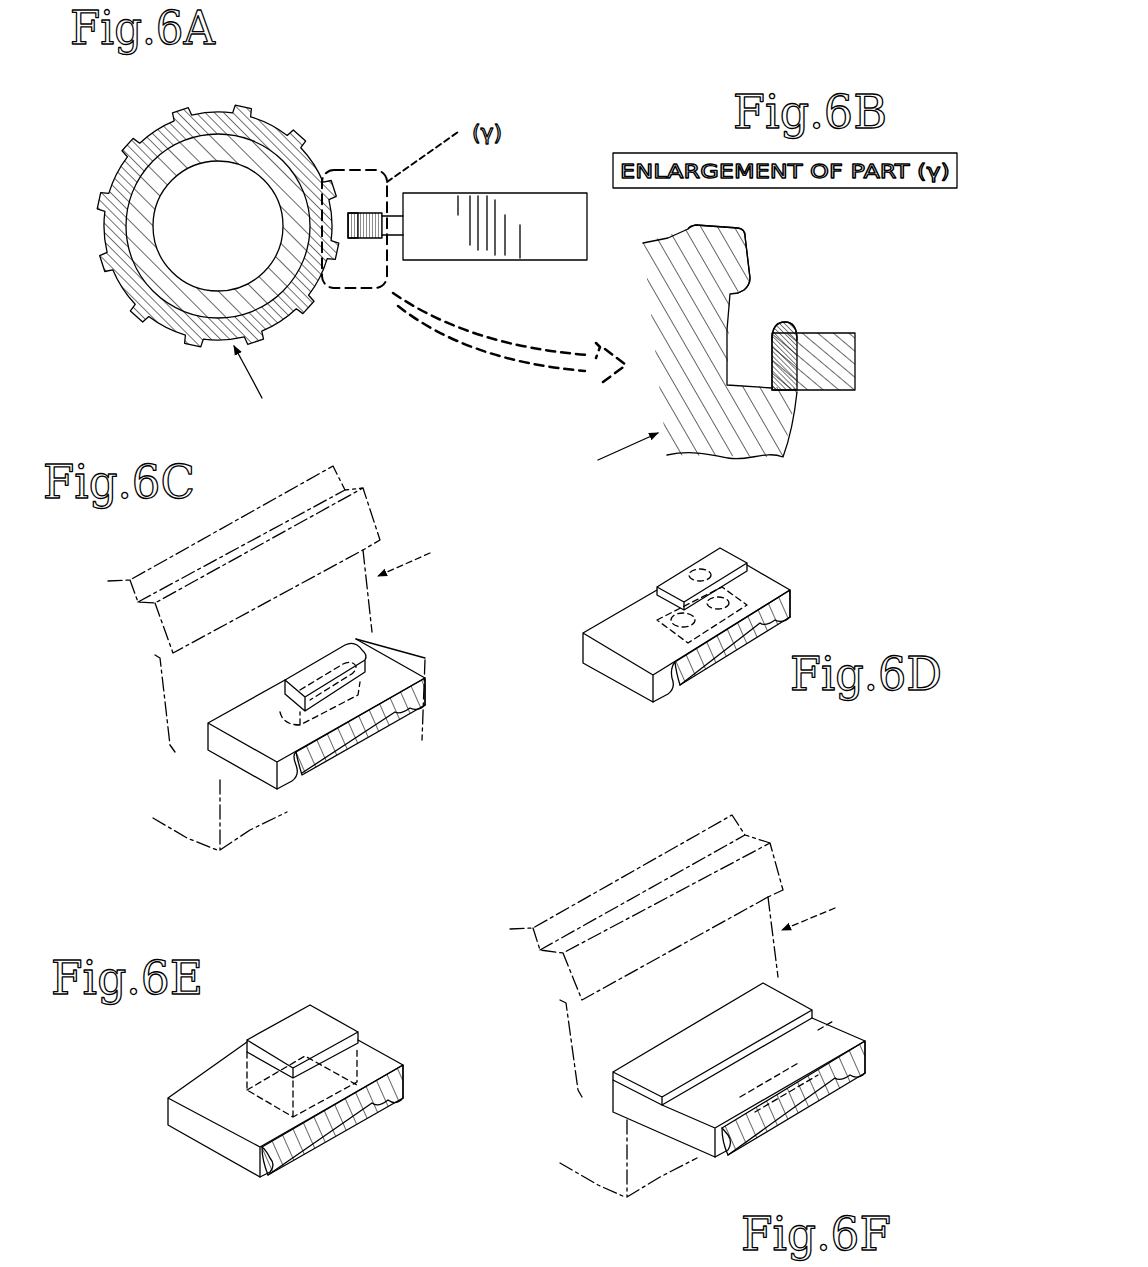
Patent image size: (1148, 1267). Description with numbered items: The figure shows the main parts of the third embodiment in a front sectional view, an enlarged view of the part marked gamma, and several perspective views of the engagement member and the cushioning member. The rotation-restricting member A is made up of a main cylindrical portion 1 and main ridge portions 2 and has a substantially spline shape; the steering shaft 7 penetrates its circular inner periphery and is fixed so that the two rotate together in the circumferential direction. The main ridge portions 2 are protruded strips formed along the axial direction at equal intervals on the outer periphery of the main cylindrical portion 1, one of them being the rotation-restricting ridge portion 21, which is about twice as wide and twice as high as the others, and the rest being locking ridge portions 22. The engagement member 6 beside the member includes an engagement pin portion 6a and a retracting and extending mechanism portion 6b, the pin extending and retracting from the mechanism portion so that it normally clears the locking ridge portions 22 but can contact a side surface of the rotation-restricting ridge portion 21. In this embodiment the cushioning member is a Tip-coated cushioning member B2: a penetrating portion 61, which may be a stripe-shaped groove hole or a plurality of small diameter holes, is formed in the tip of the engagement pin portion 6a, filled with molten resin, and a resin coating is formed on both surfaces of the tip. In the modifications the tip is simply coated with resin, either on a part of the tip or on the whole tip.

In FIG. 6A, the main cylindrical portion 1 is at (270, 330).
In FIG. 6A, the main ridge portion 2 is at (251, 226).
In FIG. 6B, the main ridge portion 2 is at (759, 348).
In FIG. 6A, the rotation-restricting ridge portion 21 is at (330, 323).
In FIG. 6B, the rotation-restricting ridge portion 21 is at (798, 446).
In FIG. 6C, the rotation-restricting ridge portion 21 is at (250, 832).
In FIG. 6F, the rotation-restricting ridge portion 21 is at (658, 1180).
In FIG. 6A, the locking ridge portion 22 is at (243, 106).
In FIG. 6B, the locking ridge portion 22 is at (752, 246).
In FIG. 6C, the locking ridge portion 22 is at (395, 515).
In FIG. 6F, the locking ridge portion 22 is at (795, 858).
In FIG. 6A, the engagement member 6 is at (467, 212).
In FIG. 6B, the engagement member 6 is at (825, 335).
In FIG. 6C, the engagement member 6 is at (348, 693).
In FIG. 6D, the engagement member 6 is at (725, 607).
In FIG. 6E, the engagement member 6 is at (257, 1098).
In FIG. 6F, the engagement member 6 is at (739, 1100).
In FIG. 6A, the engagement pin portion 6a is at (370, 212).
In FIG. 6B, the engagement pin portion 6a is at (822, 330).
In FIG. 6C, the engagement pin portion 6a is at (394, 658).
In FIG. 6D, the engagement pin portion 6a is at (767, 576).
In FIG. 6E, the engagement pin portion 6a is at (190, 1085).
In FIG. 6F, the engagement pin portion 6a is at (744, 1147).
In FIG. 6A, the retracting and extending mechanism portion 6b is at (533, 258).
In FIG. 6A, the steering shaft 7 is at (204, 163).
In FIG. 6B, the penetrating portion 61 is at (785, 345).
In FIG. 6C, the penetrating portion 61 is at (388, 655).
In FIG. 6D, the penetrating portion 61 is at (658, 633).
In FIG. 6E, the penetrating portion 61 is at (302, 1082).
In FIG. 6A, the Tip-coated cushioning member B2 is at (352, 210).
In FIG. 6B, the Tip-coated cushioning member B2 is at (797, 319).
In FIG. 6C, the Tip-coated cushioning member B2 is at (312, 676).
In FIG. 6D, the Tip-coated cushioning member B2 is at (730, 546).
In FIG. 6E, the Tip-coated cushioning member B2 is at (330, 1014).
In FIG. 6F, the Tip-coated cushioning member B2 is at (790, 995).
In FIG. 6A, the rotation-restricting member A is at (266, 416).
In FIG. 6B, the rotation-restricting member A is at (592, 470).
In FIG. 6C, the rotation-restricting member A is at (446, 556).
In FIG. 6F, the rotation-restricting member A is at (852, 912).